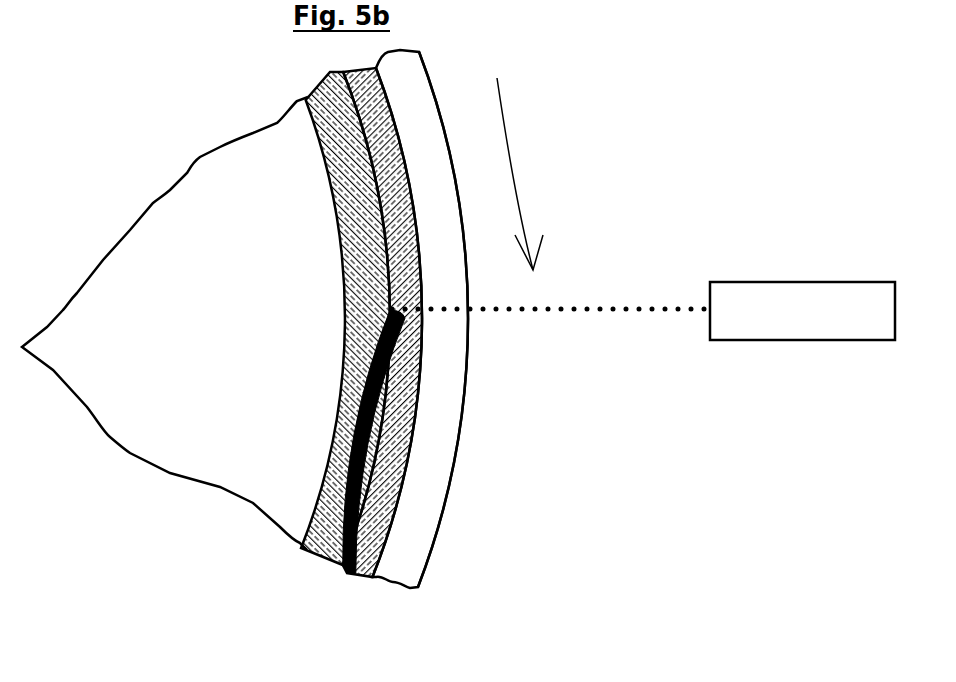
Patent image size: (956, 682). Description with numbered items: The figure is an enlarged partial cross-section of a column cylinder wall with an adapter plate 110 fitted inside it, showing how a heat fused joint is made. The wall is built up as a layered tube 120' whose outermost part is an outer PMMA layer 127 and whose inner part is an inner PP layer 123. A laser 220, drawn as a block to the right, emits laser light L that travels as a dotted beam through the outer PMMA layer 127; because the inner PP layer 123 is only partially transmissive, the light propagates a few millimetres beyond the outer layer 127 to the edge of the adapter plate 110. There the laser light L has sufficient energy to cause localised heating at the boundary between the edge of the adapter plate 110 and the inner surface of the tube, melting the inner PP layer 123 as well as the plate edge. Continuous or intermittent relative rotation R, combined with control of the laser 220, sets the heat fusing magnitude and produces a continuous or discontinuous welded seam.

The adapter plate 110 is at (192, 437).
The inner PP layer 123 is at (363, 578).
The outer PMMA layer 127 is at (407, 557).
The layer stack / coating 120' is at (517, 319).
The laser source 220 is at (760, 303).
The laser light L is at (598, 308).
The relative rotation R is at (520, 174).